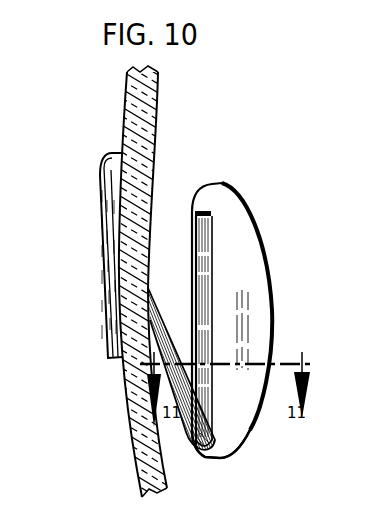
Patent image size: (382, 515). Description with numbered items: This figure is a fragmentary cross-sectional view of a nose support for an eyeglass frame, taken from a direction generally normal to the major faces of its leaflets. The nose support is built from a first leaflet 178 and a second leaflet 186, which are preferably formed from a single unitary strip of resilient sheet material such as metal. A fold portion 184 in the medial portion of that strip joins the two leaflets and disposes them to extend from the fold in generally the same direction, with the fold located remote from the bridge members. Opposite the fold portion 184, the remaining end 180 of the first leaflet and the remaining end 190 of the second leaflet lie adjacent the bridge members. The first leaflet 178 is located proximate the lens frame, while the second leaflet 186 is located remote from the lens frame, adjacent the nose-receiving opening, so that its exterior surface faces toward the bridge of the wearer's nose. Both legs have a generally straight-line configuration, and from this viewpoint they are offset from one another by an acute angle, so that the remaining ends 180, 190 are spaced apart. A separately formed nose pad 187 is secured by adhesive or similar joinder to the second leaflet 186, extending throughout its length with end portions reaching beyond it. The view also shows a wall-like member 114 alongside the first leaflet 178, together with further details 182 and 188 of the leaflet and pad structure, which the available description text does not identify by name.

The wall 114 is at (146, 98).
The first leaflet 178 is at (168, 316).
The remaining end of first leaflet 180 is at (98, 270).
The flange 182 is at (102, 334).
The fold portion 184 is at (211, 458).
The second leaflet 186 is at (222, 284).
The nose pad 187 is at (255, 313).
The web 188 is at (205, 246).
The remaining end of second leaflet 190 is at (208, 218).